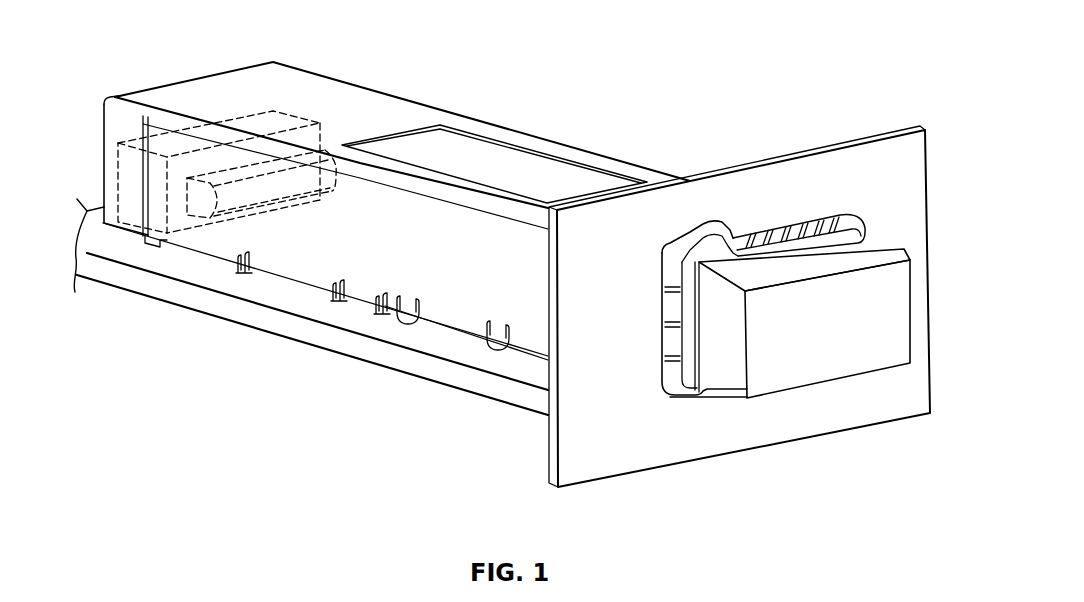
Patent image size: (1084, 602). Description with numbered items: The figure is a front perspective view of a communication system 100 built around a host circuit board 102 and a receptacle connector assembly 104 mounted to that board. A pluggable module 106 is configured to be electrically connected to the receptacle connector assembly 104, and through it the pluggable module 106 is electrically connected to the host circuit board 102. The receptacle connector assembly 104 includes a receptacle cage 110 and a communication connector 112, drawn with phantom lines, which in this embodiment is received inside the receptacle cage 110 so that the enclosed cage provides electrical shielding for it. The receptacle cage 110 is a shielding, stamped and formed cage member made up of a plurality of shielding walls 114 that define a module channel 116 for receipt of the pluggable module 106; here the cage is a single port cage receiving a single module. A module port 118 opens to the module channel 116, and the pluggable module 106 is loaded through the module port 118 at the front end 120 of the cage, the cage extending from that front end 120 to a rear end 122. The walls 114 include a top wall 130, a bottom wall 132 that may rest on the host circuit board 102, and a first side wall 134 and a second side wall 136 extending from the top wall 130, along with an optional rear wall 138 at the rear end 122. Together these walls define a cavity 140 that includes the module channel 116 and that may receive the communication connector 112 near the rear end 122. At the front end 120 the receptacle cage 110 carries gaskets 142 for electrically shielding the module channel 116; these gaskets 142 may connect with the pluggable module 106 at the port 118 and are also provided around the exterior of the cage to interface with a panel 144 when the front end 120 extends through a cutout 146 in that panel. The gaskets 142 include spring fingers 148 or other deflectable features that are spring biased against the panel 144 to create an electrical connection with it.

The communication system 100 is at (621, 40).
The host circuit board 102 is at (277, 322).
The receptacle connector assembly 104 is at (369, 77).
The pluggable module 106 is at (812, 363).
The receptacle cage 110 is at (231, 85).
The communication connector 112 is at (280, 112).
The shielding walls 114 is at (395, 112).
The module channel 116 is at (880, 237).
The module port 118 is at (712, 410).
The front end 120 is at (672, 395).
The rear end 122 is at (114, 93).
The top wall 130 is at (775, 231).
The bottom wall 132 is at (730, 399).
The first side wall 134 is at (480, 300).
The second side wall 136 is at (607, 162).
The rear wall 138 is at (104, 142).
The cavity 140 is at (521, 157).
The gaskets 142 is at (847, 212).
The panel 144 is at (572, 446).
The cutout 146 is at (650, 395).
The spring fingers 148 is at (797, 233).